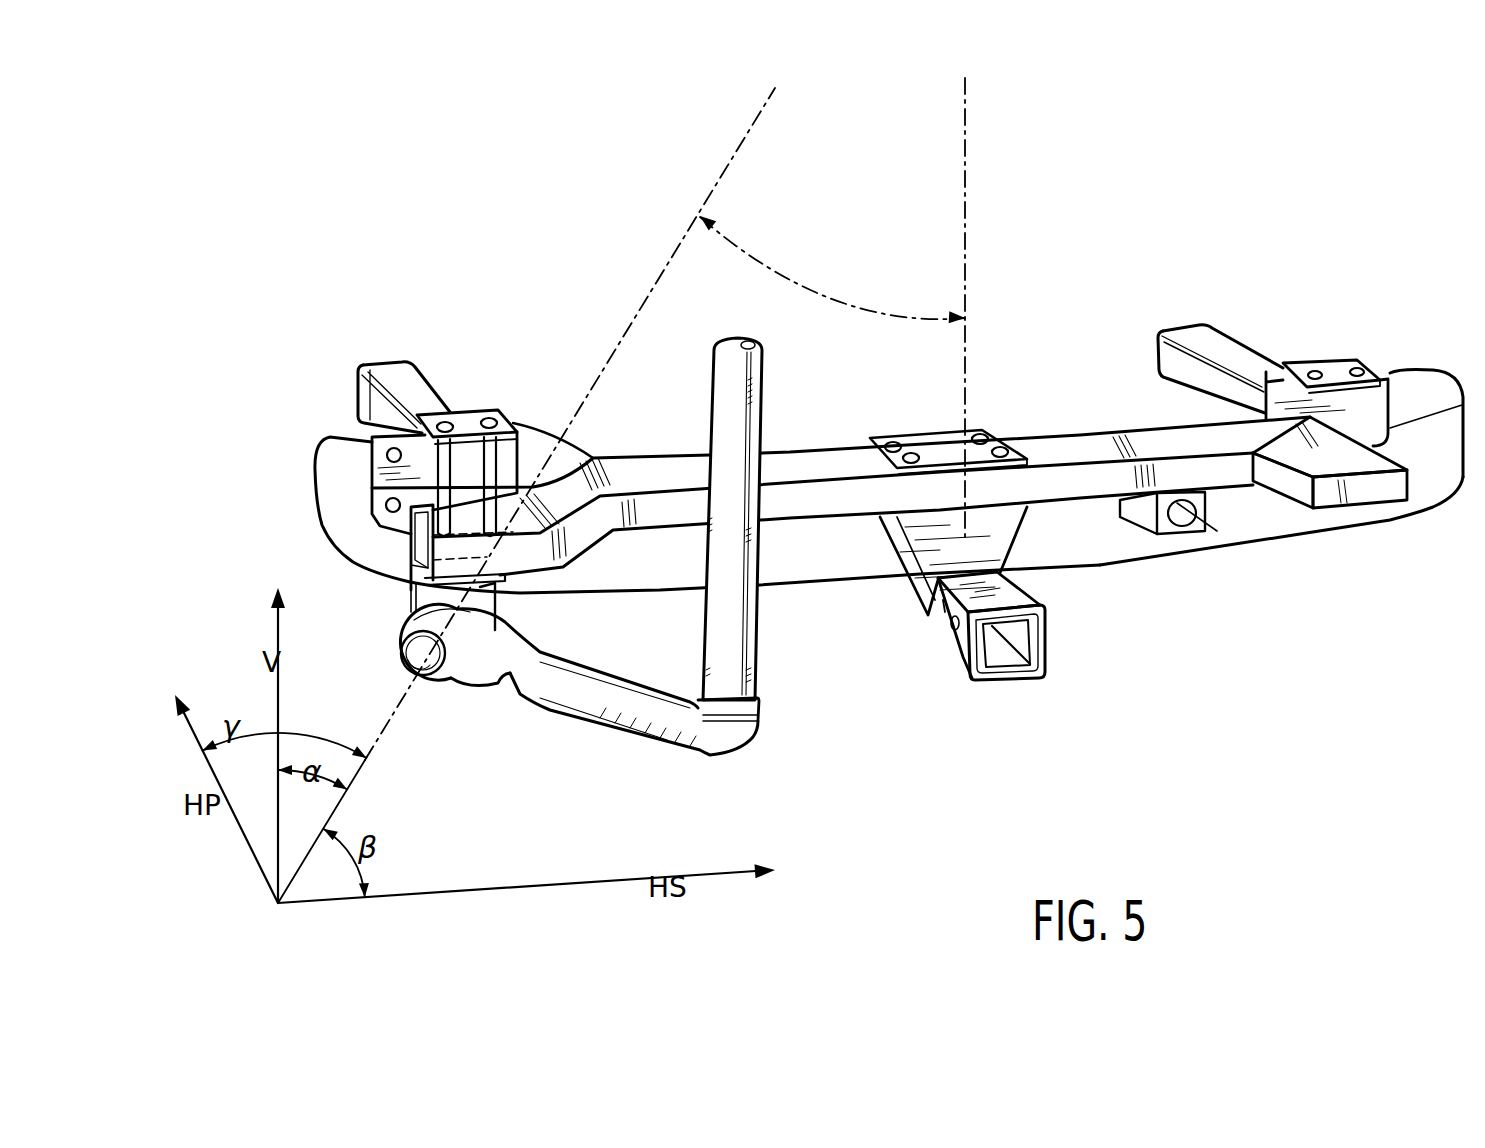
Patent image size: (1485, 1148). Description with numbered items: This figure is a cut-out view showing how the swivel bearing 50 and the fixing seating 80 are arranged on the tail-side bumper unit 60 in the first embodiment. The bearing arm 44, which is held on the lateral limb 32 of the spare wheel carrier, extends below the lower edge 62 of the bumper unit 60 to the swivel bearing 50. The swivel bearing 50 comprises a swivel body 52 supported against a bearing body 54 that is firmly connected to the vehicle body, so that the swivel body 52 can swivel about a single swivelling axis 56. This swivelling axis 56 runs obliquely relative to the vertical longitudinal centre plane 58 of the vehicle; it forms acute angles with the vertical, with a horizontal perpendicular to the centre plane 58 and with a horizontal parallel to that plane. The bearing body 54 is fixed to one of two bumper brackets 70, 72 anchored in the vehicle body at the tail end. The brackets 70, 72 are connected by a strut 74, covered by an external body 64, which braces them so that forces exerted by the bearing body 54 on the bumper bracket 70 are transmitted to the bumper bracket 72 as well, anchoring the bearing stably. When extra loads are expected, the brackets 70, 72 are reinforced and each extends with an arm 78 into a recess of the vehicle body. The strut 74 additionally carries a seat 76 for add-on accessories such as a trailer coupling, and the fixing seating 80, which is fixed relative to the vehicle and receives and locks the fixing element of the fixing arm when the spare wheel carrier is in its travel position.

The lateral limb 32 is at (733, 597).
The bearing arm 44 is at (553, 692).
The swivel bearing 50 is at (446, 674).
The swivel body 52 is at (425, 664).
The bearing body 54 is at (486, 600).
The swivelling axis 56 is at (728, 165).
The vertical longitudinal centre plane 58 is at (940, 213).
The bumper unit 60 is at (1288, 520).
The lower edge 62 is at (1278, 548).
The external body 64 is at (1085, 555).
The bumper bracket 70 is at (497, 338).
The bumper bracket 72 is at (1250, 336).
The strut 74 is at (1064, 430).
The seat 76 is at (1052, 663).
The arm 78 is at (395, 372).
The fixing seating 80 is at (1183, 527).